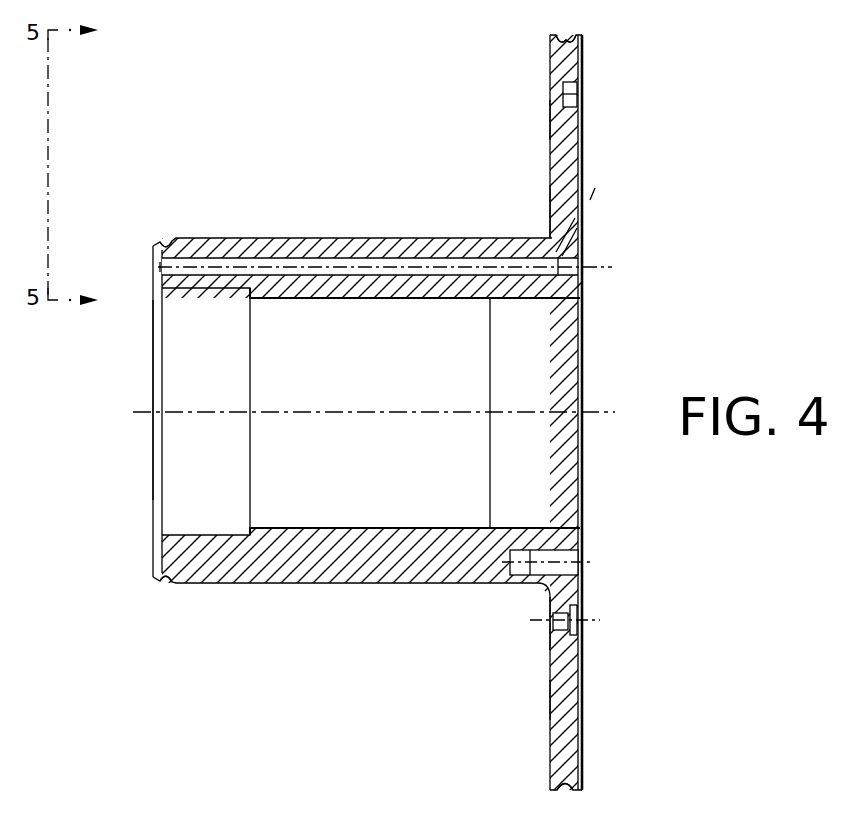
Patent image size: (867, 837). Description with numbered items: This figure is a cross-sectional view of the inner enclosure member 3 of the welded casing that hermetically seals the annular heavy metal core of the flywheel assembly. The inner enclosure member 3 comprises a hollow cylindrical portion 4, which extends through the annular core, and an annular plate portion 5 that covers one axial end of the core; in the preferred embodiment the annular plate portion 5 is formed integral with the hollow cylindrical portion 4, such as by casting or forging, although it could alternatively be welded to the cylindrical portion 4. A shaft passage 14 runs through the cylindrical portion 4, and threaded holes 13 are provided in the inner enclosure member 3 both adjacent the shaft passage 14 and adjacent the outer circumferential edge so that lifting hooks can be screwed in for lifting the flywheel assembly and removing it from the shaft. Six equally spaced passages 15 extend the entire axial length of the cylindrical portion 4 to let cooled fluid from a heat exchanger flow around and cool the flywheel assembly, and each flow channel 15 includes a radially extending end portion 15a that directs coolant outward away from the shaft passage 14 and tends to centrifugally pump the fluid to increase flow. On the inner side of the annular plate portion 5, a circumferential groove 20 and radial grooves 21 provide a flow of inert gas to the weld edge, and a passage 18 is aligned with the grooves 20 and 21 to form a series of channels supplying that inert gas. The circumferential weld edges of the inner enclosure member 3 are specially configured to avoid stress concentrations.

The inner enclosure member 3 is at (468, 134).
The hollow cylindrical portion 4 is at (235, 238).
The annular plate portion 5 is at (582, 712).
The holes 13 is at (578, 95).
The shaft passage 14 is at (153, 382).
The passages 15 is at (378, 268).
The radially extending end portion 15a is at (573, 237).
The passage 18 is at (585, 637).
The circumferential groove 20 is at (550, 193).
The radial grooves 21 is at (550, 120).